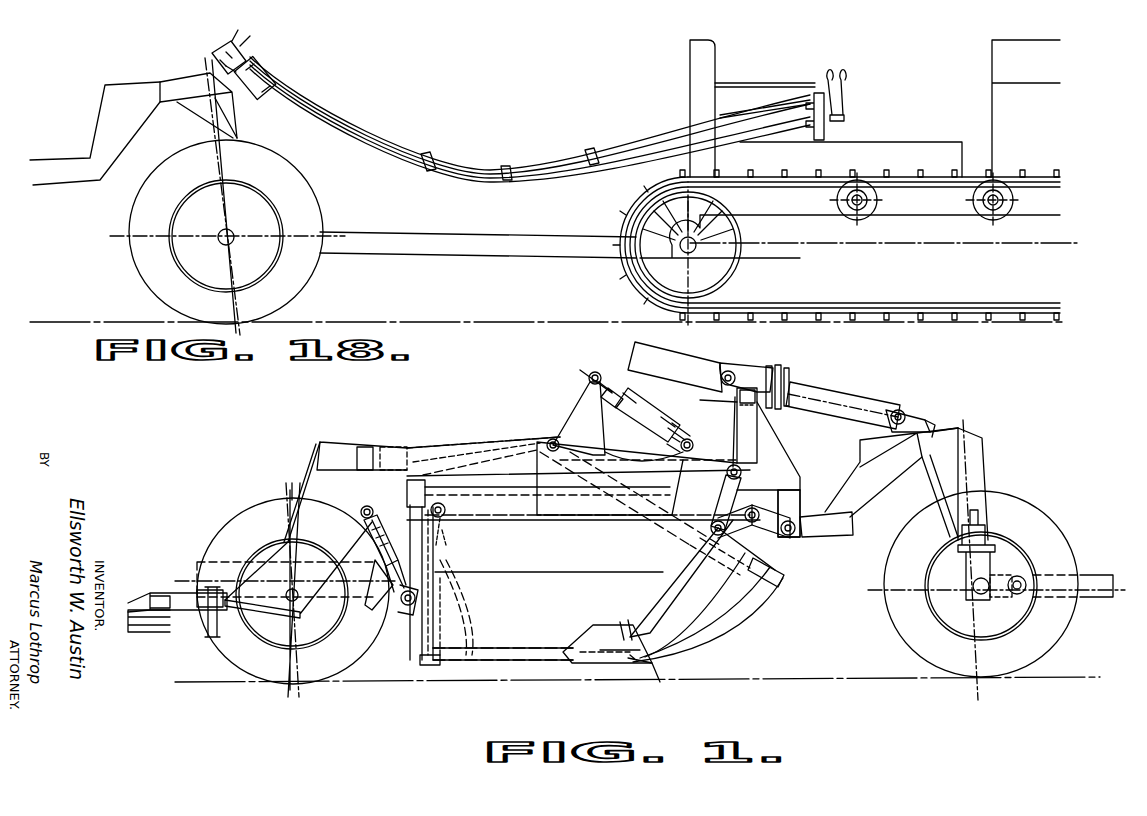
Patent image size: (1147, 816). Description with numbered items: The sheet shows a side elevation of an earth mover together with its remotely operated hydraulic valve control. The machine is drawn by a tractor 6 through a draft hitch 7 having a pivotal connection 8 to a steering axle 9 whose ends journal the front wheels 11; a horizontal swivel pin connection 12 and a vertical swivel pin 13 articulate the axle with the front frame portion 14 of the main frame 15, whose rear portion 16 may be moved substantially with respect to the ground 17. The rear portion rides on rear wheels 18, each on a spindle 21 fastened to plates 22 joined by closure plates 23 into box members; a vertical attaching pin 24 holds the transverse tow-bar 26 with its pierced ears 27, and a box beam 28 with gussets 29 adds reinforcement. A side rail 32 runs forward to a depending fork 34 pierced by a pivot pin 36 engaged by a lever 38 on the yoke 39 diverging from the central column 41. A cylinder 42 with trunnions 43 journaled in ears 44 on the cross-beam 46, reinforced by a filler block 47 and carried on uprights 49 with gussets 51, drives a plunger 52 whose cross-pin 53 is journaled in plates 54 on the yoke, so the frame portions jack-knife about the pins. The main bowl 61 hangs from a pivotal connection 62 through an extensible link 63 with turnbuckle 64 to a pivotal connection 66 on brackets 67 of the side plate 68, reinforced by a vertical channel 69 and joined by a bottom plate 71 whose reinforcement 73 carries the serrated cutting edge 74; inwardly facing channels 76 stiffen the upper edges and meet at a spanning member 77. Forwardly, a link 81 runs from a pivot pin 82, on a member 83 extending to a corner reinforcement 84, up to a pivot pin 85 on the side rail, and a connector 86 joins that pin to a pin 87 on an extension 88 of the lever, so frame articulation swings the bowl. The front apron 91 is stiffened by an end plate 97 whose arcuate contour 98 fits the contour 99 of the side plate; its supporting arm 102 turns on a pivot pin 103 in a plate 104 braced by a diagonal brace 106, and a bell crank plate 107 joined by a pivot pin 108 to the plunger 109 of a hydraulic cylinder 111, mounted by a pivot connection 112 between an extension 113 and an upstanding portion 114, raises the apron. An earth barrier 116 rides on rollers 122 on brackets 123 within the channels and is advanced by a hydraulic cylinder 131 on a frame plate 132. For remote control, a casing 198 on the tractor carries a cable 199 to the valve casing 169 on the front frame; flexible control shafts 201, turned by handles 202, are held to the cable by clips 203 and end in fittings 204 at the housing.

In FIG. 18, the tractor 6 is at (846, 182).
In FIG. 18, the draft hitch 7 is at (414, 240).
In FIG. 1, the draft hitch 7 is at (1103, 575).
In FIG. 1, the pivotal connection 8 is at (1025, 578).
In FIG. 18, the steering axle 9 is at (234, 232).
In FIG. 1, the steering axle 9 is at (975, 596).
In FIG. 18, the front wheels 11 is at (148, 279).
In FIG. 1, the front wheels 11 is at (905, 640).
In FIG. 1, the horizontal swivel pin connection 12 is at (995, 600).
In FIG. 1, the vertical swivel pin 13 is at (988, 535).
In FIG. 18, the front frame portion 14 is at (232, 100).
In FIG. 1, the front frame portion 14 is at (984, 437).
In FIG. 1, the main frame 15 is at (398, 440).
In FIG. 1, the rear frame portion 16 is at (424, 445).
In FIG. 18, the ground 17 is at (500, 323).
In FIG. 1, the ground 17 is at (421, 683).
In FIG. 1, the rear wheels 18 is at (250, 512).
In FIG. 1, the spindle 21 is at (282, 616).
In FIG. 1, the plates 22 is at (320, 478).
In FIG. 1, the closure plates 23 is at (286, 527).
In FIG. 1, the vertical attaching pin 24 is at (208, 630).
In FIG. 1, the tow-bar 26 is at (162, 596).
In FIG. 1, the ears 27 is at (156, 633).
In FIG. 1, the box beam 28 is at (358, 448).
In FIG. 1, the gussets 29 is at (386, 448).
In FIG. 1, the side rail 32 is at (462, 446).
In FIG. 1, the depending fork 34 is at (795, 505).
In FIG. 1, the pivot pins 36 is at (790, 537).
In FIG. 1, the lever 38 is at (815, 530).
In FIG. 18, the yoke 39 is at (108, 158).
In FIG. 1, the yoke 39 is at (880, 490).
In FIG. 18, the central column 41 is at (193, 128).
In FIG. 1, the central column 41 is at (978, 468).
In FIG. 1, the cylinder 42 is at (742, 365).
In FIG. 1, the trunnions 43 is at (725, 370).
In FIG. 1, the ears 44 is at (738, 400).
In FIG. 1, the cross-beam 46 is at (771, 370).
In FIG. 1, the filler block 47 is at (752, 424).
In FIG. 1, the uprights 49 is at (748, 432).
In FIG. 1, the gussets 51 is at (786, 455).
In FIG. 1, the plunger 52 is at (845, 398).
In FIG. 1, the cross-pin 53 is at (900, 408).
In FIG. 1, the plates 54 is at (928, 420).
In FIG. 1, the main bowl 61 is at (505, 655).
In FIG. 1, the pivotal connection 62 is at (362, 510).
In FIG. 1, the extensible link 63 is at (380, 530).
In FIG. 1, the turnbuckle 64 is at (367, 532).
In FIG. 1, the pivotal connection 66 is at (406, 606).
In FIG. 1, the brackets 67 is at (420, 605).
In FIG. 1, the side plate 68 is at (405, 666).
In FIG. 1, the vertical channel 69 is at (436, 662).
In FIG. 1, the bottom plate 71 is at (532, 650).
In FIG. 1, the reinforcement 73 is at (600, 662).
In FIG. 1, the cutting edge 74 is at (654, 666).
In FIG. 1, the channels 76 is at (523, 521).
In FIG. 1, the spanning member 77 is at (432, 474).
In FIG. 1, the link 81 is at (742, 476).
In FIG. 1, the pivot pin 82 is at (695, 540).
In FIG. 1, the member 83 is at (684, 585).
In FIG. 1, the corner reinforcement 84 is at (622, 625).
In FIG. 1, the pivot pin 85 is at (741, 474).
In FIG. 1, the connectors 86 is at (735, 545).
In FIG. 1, the pin 87 is at (754, 512).
In FIG. 1, the extension 88 is at (766, 530).
In FIG. 1, the front apron 91 is at (766, 598).
In FIG. 1, the plate 97 is at (742, 622).
In FIG. 1, the arcuate contour 98 is at (712, 644).
In FIG. 1, the arcuate contour 99 is at (706, 590).
In FIG. 1, the supporting arm 102 is at (666, 531).
In FIG. 1, the pivot pins 103 is at (552, 440).
In FIG. 1, the plates 104 is at (540, 486).
In FIG. 1, the diagonal braces 106 is at (515, 445).
In FIG. 1, the bell crank plate 107 is at (575, 410).
In FIG. 1, the pivot pin 108 is at (628, 352).
In FIG. 1, the plunger 109 is at (588, 380).
In FIG. 1, the hydraulic cylinder 111 is at (662, 415).
In FIG. 1, the pivot connection 112 is at (694, 446).
In FIG. 1, the extension 113 is at (682, 436).
In FIG. 1, the upstanding portion 114 is at (660, 450).
In FIG. 1, the earth barrier 116 is at (465, 633).
In FIG. 1, the rollers 122 is at (446, 516).
In FIG. 1, the brackets 123 is at (440, 535).
In FIG. 1, the hydraulic cylinder 131 is at (215, 562).
In FIG. 1, the frame plate 132 is at (380, 603).
In FIG. 18, the valve casing 169 is at (220, 52).
In FIG. 18, the casing 198 is at (830, 132).
In FIG. 18, the cable 199 is at (770, 96).
In FIG. 18, the flexible control shafts 201 is at (552, 180).
In FIG. 18, the handle 202 is at (846, 87).
In FIG. 18, the supporting clips 203 is at (426, 158).
In FIG. 18, the fitting 204 is at (272, 92).